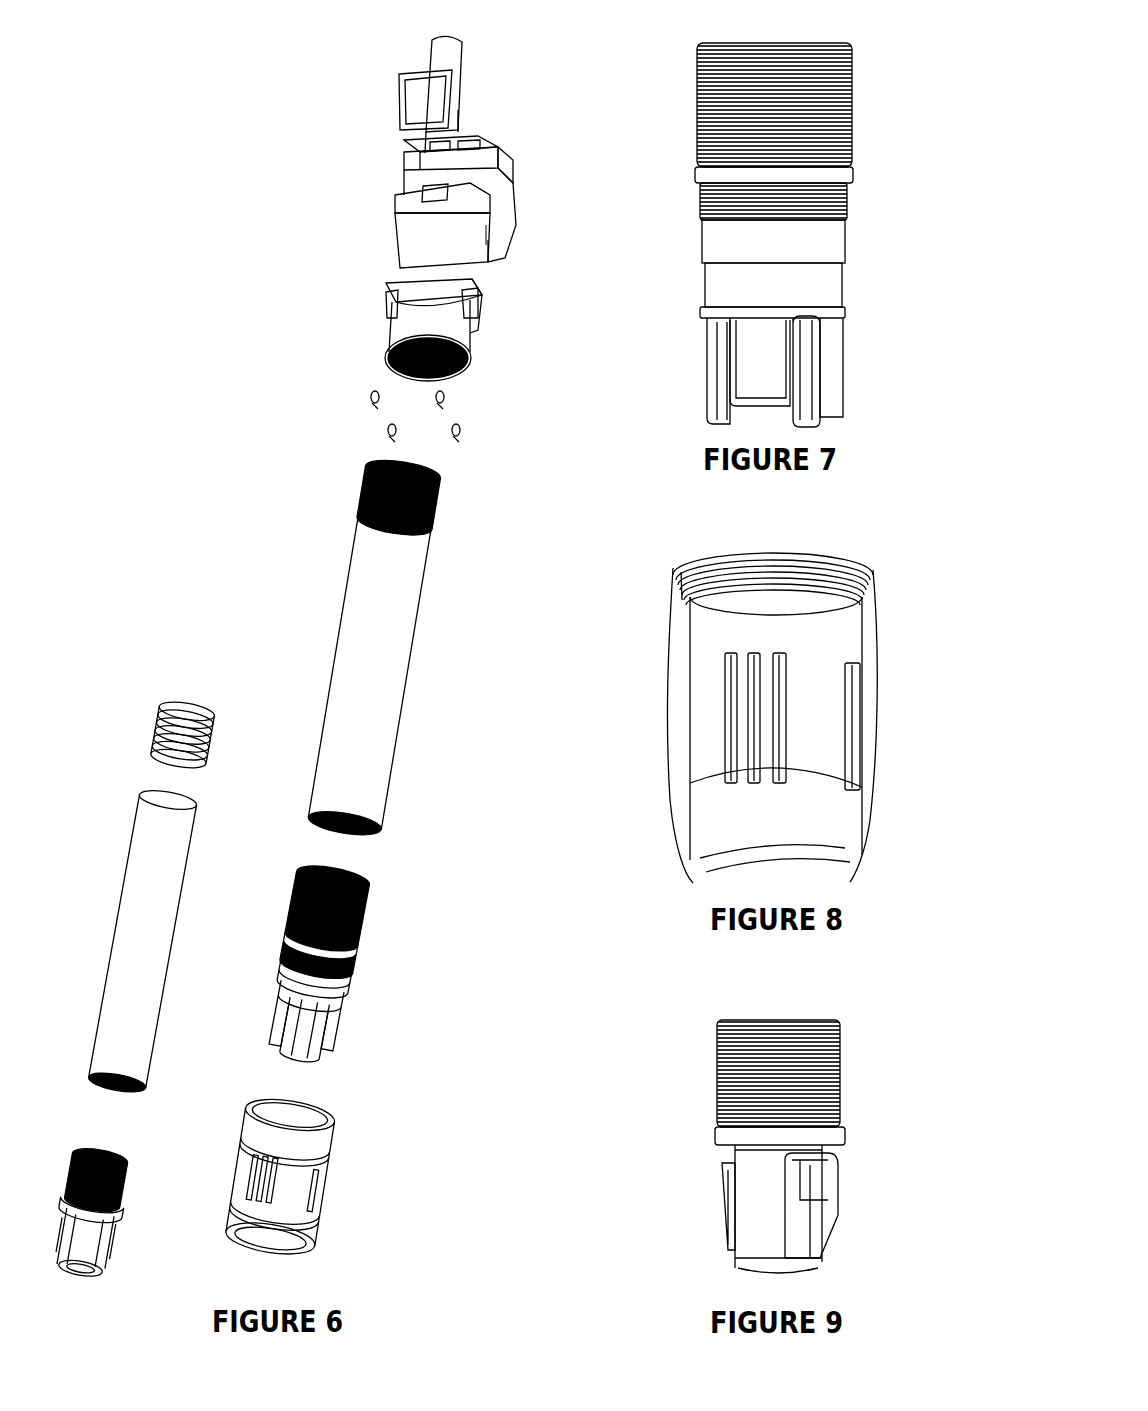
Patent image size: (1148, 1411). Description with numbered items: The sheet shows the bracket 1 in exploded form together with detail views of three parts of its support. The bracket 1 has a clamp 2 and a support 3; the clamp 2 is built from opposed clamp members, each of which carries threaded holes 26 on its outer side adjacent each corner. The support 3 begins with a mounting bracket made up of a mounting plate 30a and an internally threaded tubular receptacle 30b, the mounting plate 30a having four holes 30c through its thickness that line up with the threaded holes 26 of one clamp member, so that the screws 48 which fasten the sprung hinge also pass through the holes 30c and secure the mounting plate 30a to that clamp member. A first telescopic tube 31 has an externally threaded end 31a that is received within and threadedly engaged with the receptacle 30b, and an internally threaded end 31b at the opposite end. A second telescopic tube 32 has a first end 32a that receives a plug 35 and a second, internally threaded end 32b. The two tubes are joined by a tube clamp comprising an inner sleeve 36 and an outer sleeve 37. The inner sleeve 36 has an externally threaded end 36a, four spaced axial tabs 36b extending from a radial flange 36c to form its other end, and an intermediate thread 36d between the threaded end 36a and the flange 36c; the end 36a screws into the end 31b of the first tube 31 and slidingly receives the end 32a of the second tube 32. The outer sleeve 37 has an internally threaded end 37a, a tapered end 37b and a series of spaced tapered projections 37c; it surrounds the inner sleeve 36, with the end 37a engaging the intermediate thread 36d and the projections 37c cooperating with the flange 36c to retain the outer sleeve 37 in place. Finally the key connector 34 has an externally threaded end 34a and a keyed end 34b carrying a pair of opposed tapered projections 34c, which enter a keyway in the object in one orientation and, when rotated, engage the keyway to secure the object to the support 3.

In FIG. 6, the pen assembly 1 is at (160, 193).
In FIG. 6, the clamp 2 is at (348, 110).
In FIG. 6, the support 3 is at (202, 429).
In FIG. 6, the threaded holes 26 is at (480, 250).
In FIG. 6, the mounting plate 30a is at (410, 283).
In FIG. 6, the internally threaded tubular receptacle 30b is at (447, 334).
In FIG. 6, the holes 30c is at (392, 300).
In FIG. 6, the screws 48 is at (462, 430).
In FIG. 6, the first telescopic tube 31 is at (387, 681).
In FIG. 6, the first, externally threaded end 31a is at (368, 492).
In FIG. 6, the second, internally threaded end 31b is at (348, 828).
In FIG. 6, the plug 35 is at (175, 700).
In FIG. 6, the second telescopic tube 32 is at (158, 954).
In FIG. 6, the first end 32a is at (155, 798).
In FIG. 6, the second, internally threaded end 32b is at (116, 1085).
In FIG. 6, the inner sleeve 36 is at (382, 998).
In FIG. 7, the inner sleeve 36 is at (906, 172).
In FIG. 7, the first, externally threaded end 36a is at (850, 83).
In FIG. 7, the axial tabs 36b is at (755, 368).
In FIG. 7, the radial flange 36c is at (845, 316).
In FIG. 7, the intermediate thread 36d is at (848, 202).
In FIG. 6, the outer sleeve 37 is at (344, 1190).
In FIG. 8, the outer sleeve 37 is at (903, 637).
In FIG. 8, the first, internally threaded end 37a is at (715, 570).
In FIG. 8, the second, tapered end 37b is at (793, 837).
In FIG. 8, the tapered projections 37c is at (852, 663).
In FIG. 6, the key connector 34 is at (122, 1213).
In FIG. 9, the key connector 34 is at (688, 1097).
In FIG. 9, the first, externally threaded end 34a is at (830, 1068).
In FIG. 9, the second, keyed end 34b is at (893, 1203).
In FIG. 9, the tapered projections 34c is at (730, 1193).